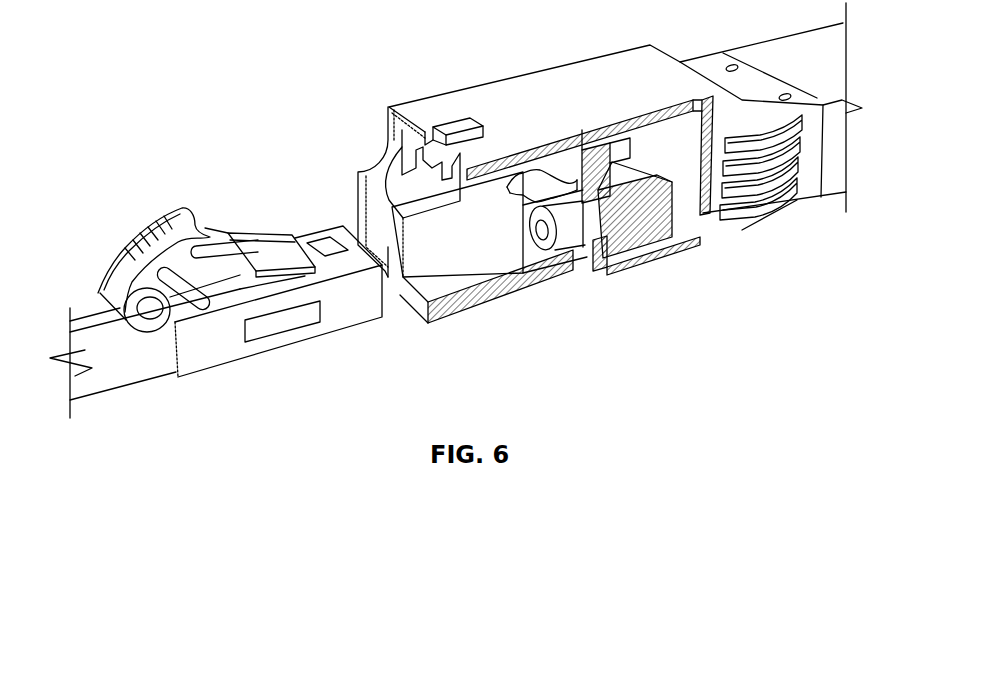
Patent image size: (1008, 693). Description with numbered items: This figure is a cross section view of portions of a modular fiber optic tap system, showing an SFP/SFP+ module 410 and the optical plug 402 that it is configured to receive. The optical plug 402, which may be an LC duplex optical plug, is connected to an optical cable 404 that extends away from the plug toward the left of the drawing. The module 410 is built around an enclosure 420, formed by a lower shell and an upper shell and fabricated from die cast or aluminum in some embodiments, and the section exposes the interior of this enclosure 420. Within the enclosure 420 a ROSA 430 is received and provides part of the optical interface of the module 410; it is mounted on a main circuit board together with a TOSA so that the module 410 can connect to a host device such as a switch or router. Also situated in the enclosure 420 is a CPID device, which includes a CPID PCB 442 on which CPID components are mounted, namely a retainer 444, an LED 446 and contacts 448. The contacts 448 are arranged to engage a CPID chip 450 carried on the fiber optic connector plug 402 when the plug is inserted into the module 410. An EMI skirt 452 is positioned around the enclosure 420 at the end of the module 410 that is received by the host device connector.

The optical plug 402 is at (342, 318).
The optical cable 404 is at (118, 375).
The SFP/SFP+ module 410 is at (438, 110).
The enclosure 420 is at (492, 305).
The ROSA 430 is at (648, 245).
The CPID PCB 442 is at (640, 117).
The retainer 444 is at (588, 150).
The LED 446 is at (457, 128).
The contacts 448 is at (572, 252).
The CPID chip 450 is at (332, 245).
The EMI skirt 452 is at (793, 202).